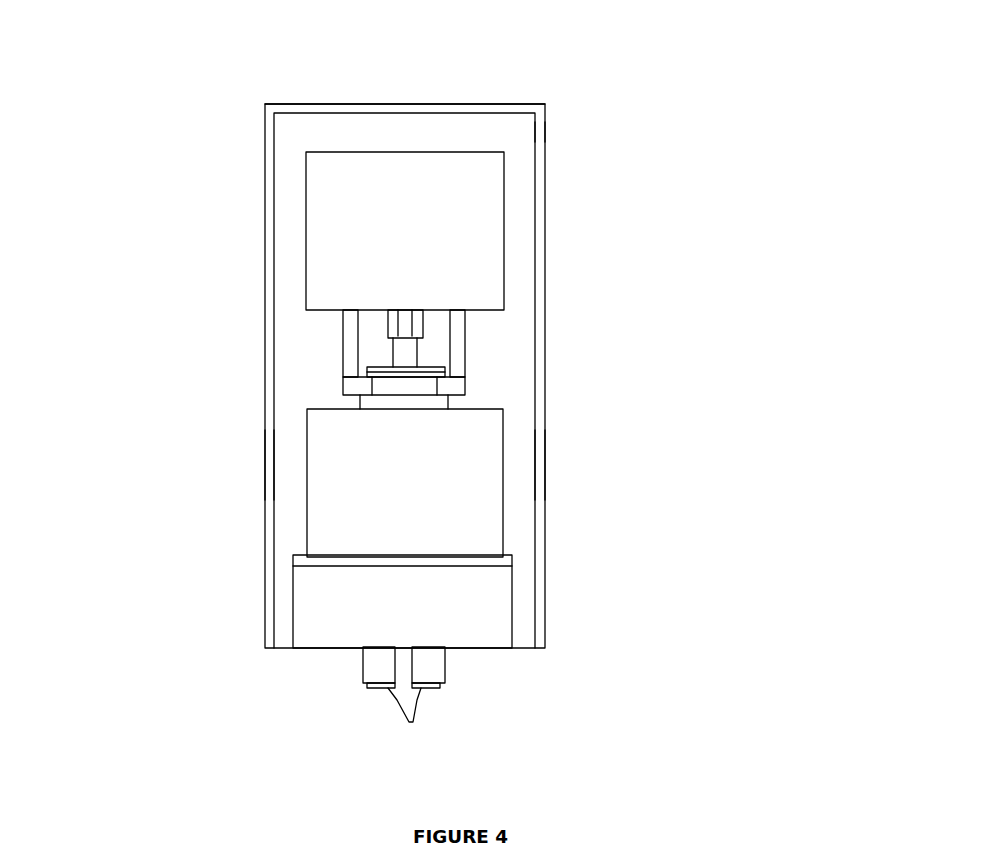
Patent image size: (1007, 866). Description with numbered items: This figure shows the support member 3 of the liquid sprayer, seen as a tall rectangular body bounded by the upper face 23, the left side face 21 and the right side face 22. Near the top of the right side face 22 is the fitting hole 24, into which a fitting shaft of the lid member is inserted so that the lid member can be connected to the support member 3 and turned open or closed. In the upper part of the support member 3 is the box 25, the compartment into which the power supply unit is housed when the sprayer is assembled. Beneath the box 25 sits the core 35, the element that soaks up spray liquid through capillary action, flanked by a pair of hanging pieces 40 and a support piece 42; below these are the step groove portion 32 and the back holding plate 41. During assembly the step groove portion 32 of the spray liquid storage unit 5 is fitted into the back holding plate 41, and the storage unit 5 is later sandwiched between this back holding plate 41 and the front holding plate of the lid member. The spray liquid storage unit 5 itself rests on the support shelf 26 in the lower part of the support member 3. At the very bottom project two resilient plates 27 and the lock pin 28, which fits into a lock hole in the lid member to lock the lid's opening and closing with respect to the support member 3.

The support member 3 is at (465, 73).
The spray liquid storage unit 5 is at (503, 508).
The left side face 21 is at (270, 463).
The right side face 22 is at (543, 467).
The upper face 23 is at (364, 104).
The fitting hole 24 is at (547, 132).
The box 25 is at (306, 232).
The support shelf 26 is at (512, 561).
The resilient plate 27 is at (495, 675).
The lock pin 28 is at (450, 721).
The step groove portion 32 is at (440, 390).
The core 35 is at (390, 327).
The hanging piece 40 is at (350, 352).
The back holding plate 41 is at (352, 391).
The support piece 42 is at (423, 315).